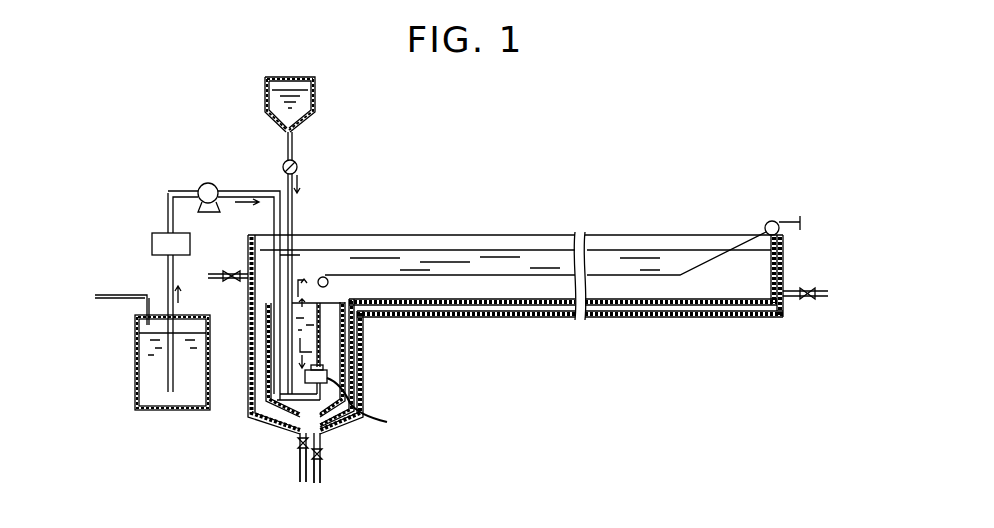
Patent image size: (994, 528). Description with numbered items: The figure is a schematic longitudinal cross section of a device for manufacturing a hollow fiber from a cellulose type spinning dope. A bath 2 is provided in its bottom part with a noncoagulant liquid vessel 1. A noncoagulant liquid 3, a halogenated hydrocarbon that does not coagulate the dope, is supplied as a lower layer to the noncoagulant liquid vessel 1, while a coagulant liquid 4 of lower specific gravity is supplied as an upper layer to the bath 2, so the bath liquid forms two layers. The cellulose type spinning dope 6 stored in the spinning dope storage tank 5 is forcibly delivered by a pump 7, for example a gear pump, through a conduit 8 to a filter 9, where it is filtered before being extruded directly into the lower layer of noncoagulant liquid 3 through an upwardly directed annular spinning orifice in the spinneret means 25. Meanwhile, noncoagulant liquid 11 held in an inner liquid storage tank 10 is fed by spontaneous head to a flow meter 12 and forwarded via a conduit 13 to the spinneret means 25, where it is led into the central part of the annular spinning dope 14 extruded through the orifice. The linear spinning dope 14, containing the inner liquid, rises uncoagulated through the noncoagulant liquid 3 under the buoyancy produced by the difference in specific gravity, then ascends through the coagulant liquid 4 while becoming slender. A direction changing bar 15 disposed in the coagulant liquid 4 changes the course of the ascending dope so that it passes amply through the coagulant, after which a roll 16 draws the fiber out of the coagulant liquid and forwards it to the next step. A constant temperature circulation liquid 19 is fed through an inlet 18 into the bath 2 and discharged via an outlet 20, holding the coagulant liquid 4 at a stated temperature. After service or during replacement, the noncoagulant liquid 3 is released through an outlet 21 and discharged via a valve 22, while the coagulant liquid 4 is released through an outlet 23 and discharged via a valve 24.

The noncoagulant liquid vessel 1 is at (340, 389).
The bath 2 is at (240, 260).
The noncoagulant liquid 3 is at (330, 355).
The coagulant liquid 4 is at (507, 300).
The spinning dope storage tank 5 is at (133, 340).
The cellulose type spinning dope 6 is at (185, 407).
The pump 7 is at (208, 183).
The conduit 8 is at (276, 197).
The filter 9 is at (162, 238).
The inner liquid storage tank 10 is at (265, 93).
The noncoagulant liquid 11 is at (307, 102).
The flow meter 12 is at (297, 166).
The conduit 13 is at (292, 211).
The annular spinning dope 14 is at (320, 337).
The direction changing bar 15 is at (328, 279).
The roll 16 is at (771, 221).
The inlet 18 is at (219, 279).
The constant temperature circulation liquid 19 is at (250, 380).
The outlet 20 is at (800, 299).
The outlet 21 is at (290, 432).
The valve 22 is at (299, 464).
The outlet 23 is at (322, 446).
The valve 24 is at (322, 468).
The spinneret means 25 is at (373, 405).